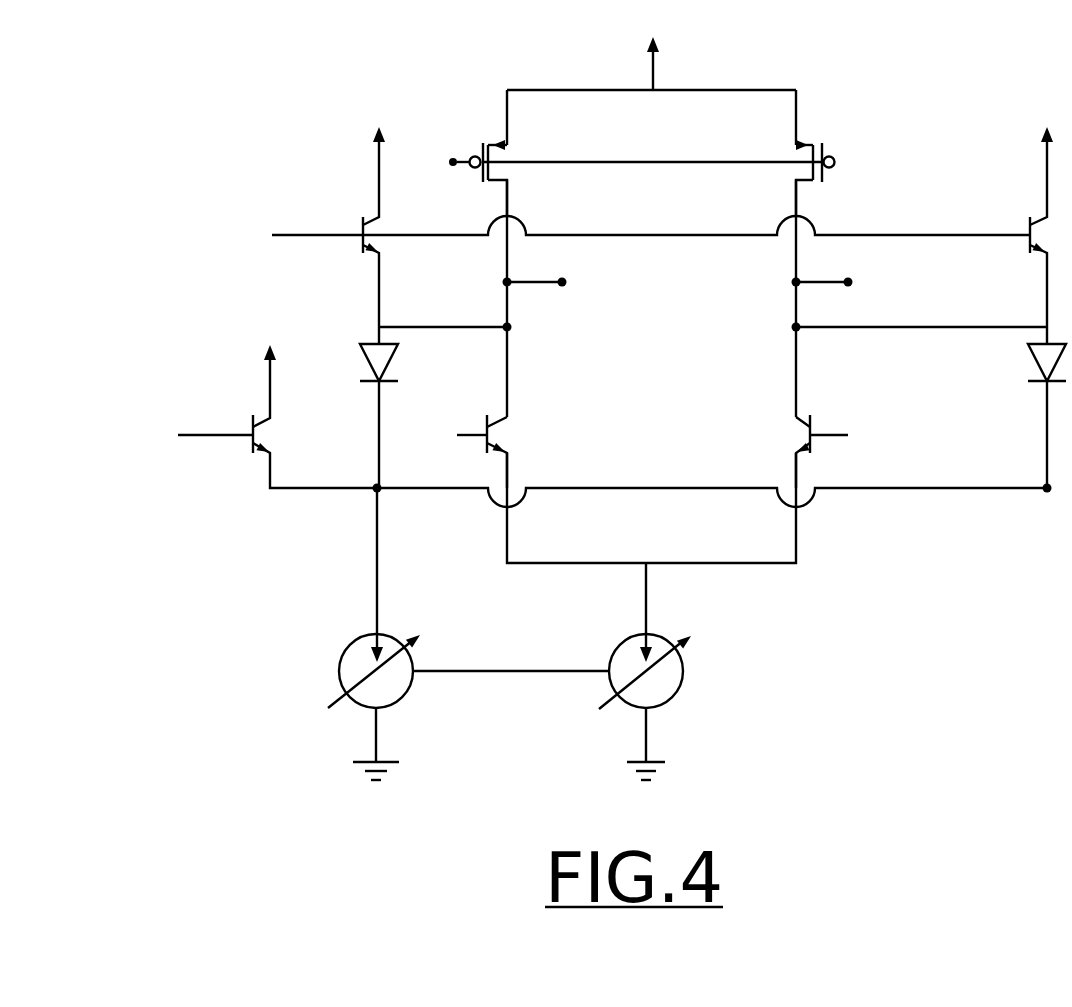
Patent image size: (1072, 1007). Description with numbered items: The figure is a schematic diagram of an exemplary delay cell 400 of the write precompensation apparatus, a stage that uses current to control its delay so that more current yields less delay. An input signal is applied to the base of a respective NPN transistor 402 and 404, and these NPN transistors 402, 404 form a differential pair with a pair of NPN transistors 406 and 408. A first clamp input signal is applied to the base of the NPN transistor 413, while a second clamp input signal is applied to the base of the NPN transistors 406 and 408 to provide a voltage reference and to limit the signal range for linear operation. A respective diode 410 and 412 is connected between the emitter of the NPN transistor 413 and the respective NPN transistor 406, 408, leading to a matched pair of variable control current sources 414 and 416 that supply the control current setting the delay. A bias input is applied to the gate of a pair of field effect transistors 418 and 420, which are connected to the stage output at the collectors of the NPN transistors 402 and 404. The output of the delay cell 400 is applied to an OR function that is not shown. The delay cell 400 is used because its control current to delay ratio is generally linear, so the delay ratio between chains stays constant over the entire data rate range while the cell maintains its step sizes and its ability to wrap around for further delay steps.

The delay cell 400 is at (569, 395).
The NPN transistor 402 is at (518, 451).
The NPN transistor 404 is at (778, 451).
The NPN transistor 406 is at (351, 235).
The NPN transistor 408 is at (1018, 235).
The diode 410 is at (356, 416).
The diode 412 is at (1024, 416).
The NPN transistor 413 is at (291, 416).
The variable control current source 414 is at (356, 634).
The variable control current source 416 is at (664, 707).
The field effect transistor 418 is at (476, 168).
The field effect transistor 420 is at (840, 168).